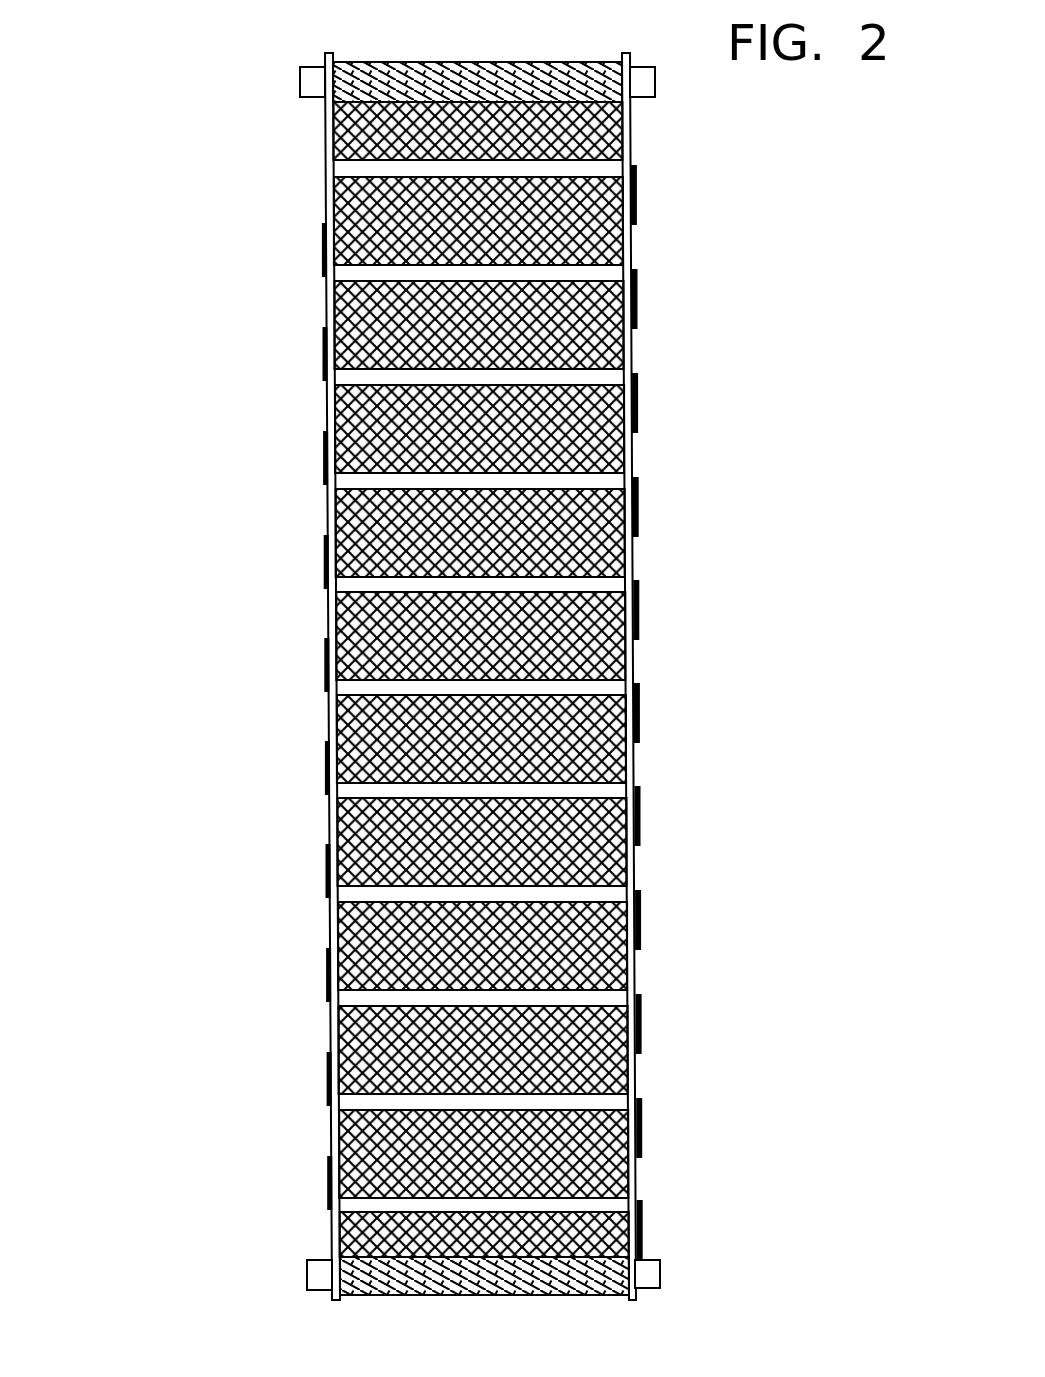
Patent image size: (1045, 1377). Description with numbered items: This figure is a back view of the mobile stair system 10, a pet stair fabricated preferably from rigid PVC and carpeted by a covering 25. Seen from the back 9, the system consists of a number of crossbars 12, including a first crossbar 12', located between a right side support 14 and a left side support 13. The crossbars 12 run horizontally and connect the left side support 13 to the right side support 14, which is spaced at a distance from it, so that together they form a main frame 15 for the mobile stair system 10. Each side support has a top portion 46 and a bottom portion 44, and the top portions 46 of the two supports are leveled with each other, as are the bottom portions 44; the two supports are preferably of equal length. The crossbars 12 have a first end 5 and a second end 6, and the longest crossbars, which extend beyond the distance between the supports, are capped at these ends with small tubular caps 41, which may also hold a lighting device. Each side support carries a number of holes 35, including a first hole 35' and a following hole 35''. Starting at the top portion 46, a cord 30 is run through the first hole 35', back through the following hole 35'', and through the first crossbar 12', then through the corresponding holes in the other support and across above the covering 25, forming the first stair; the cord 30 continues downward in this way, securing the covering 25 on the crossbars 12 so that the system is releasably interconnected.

The mobile stair system 10 is at (258, 402).
The back 9 is at (312, 517).
The crossbars 12 is at (360, 687).
The first crossbar 12' is at (614, 216).
The left side support 13 is at (634, 972).
The right side support 14 is at (329, 819).
The main frame 15 is at (576, 786).
The cord 30 is at (633, 500).
The holes 35 is at (487, 1053).
The first hole 35' is at (490, 201).
The following hole 35'' is at (497, 302).
The tubular caps 41 is at (300, 80).
The covering 25 is at (534, 1300).
The top portion 46 is at (327, 132).
The bottom portion 44 is at (334, 1230).
The first end 5 is at (351, 892).
The second end 6 is at (605, 893).